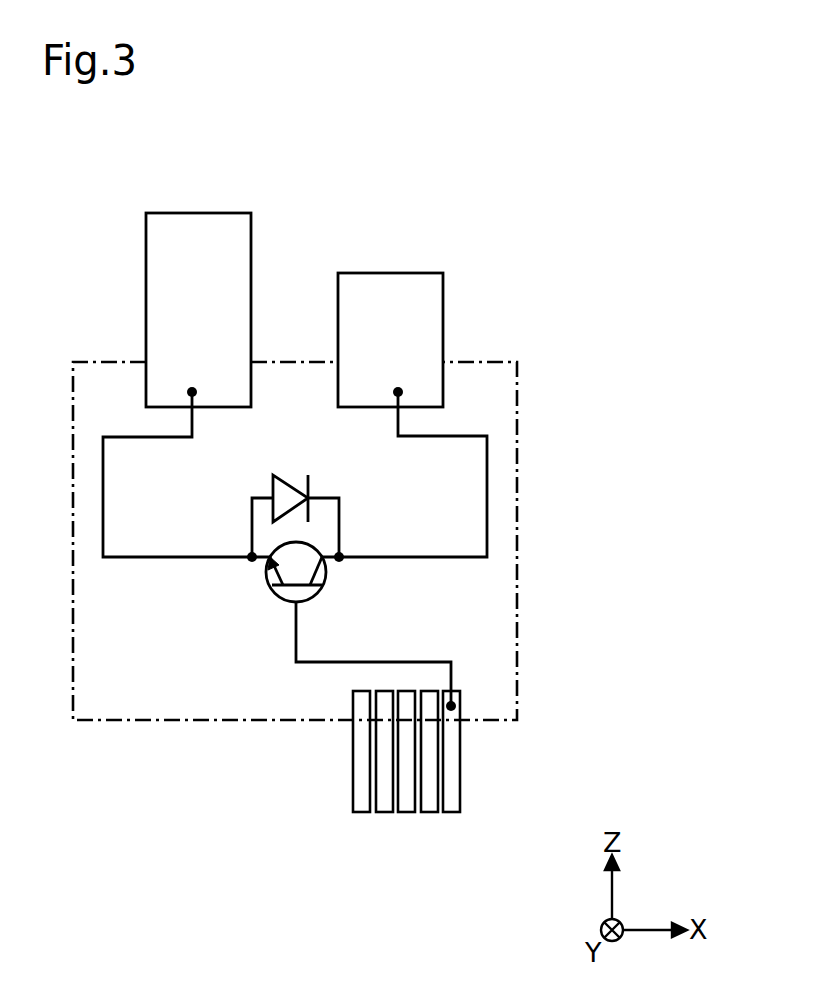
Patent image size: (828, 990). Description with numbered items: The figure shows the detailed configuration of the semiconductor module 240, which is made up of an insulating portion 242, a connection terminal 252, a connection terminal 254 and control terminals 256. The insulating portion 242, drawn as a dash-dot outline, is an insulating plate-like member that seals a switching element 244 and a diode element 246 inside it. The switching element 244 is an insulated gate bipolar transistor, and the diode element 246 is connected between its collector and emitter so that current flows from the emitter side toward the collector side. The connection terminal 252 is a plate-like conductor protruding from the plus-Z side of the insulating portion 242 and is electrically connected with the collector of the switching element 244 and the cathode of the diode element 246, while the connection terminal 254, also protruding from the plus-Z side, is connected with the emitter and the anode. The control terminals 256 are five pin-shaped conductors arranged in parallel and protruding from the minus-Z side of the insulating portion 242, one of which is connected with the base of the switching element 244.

The semiconductor module 240 is at (548, 205).
The insulating portion 242 is at (519, 584).
The switching element 244 is at (323, 592).
The diode element 246 is at (293, 476).
The connection terminal 252 is at (415, 273).
The connection terminal 254 is at (221, 213).
The control terminals 256 is at (461, 777).